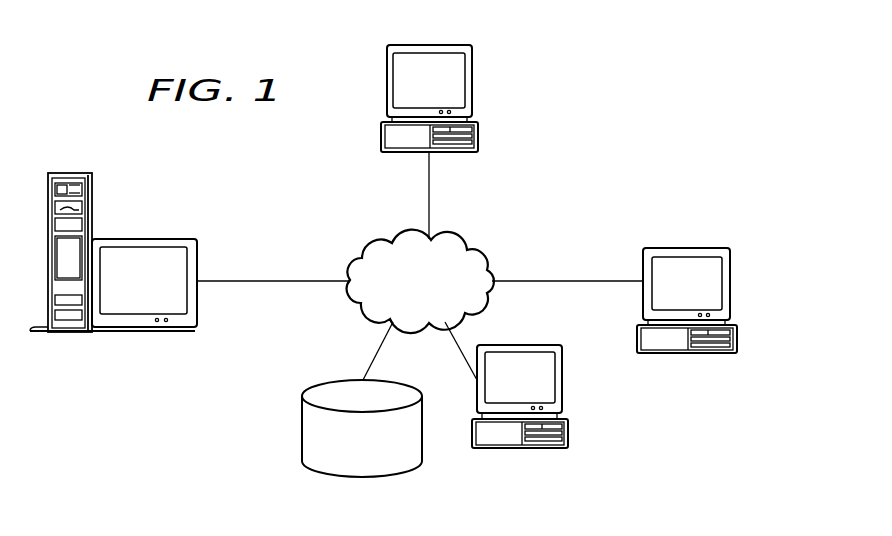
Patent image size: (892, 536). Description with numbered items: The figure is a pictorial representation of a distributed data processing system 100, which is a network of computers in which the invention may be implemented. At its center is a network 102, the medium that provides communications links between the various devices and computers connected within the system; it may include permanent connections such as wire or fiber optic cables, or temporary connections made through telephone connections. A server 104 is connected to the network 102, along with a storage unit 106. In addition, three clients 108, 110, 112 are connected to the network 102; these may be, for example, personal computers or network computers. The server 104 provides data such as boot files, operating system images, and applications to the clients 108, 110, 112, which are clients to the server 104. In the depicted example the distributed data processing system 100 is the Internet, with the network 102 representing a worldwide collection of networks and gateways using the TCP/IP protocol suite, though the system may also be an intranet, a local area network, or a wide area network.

The distributed data processing system 100 is at (193, 400).
The network 102 is at (400, 238).
The server 104 is at (142, 238).
The storage unit 106 is at (303, 427).
The client 108 is at (472, 78).
The client 110 is at (730, 285).
The client 112 is at (562, 380).